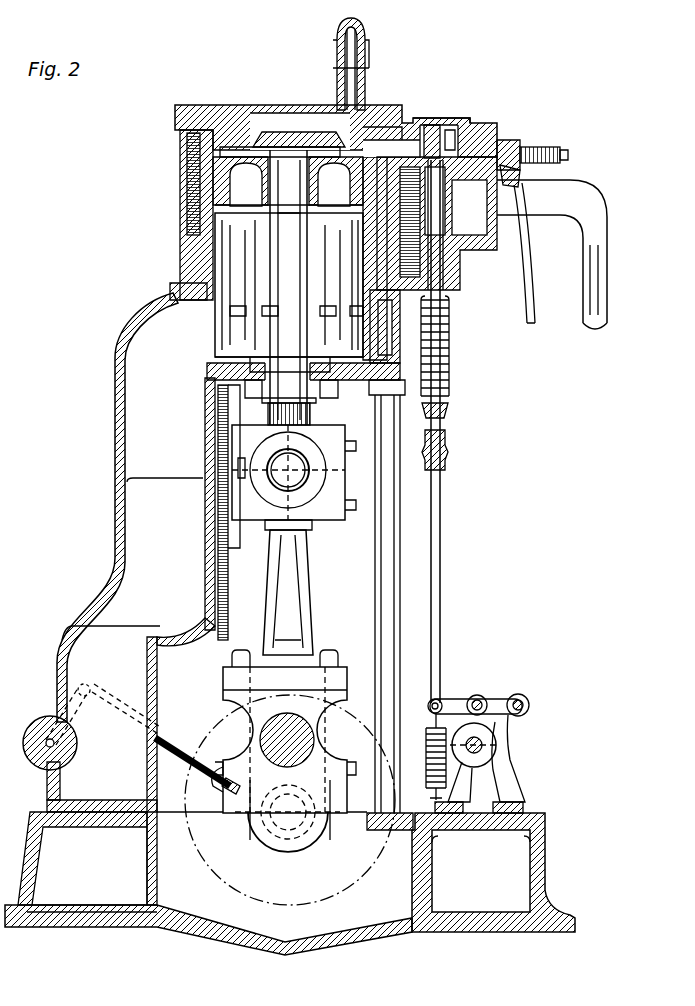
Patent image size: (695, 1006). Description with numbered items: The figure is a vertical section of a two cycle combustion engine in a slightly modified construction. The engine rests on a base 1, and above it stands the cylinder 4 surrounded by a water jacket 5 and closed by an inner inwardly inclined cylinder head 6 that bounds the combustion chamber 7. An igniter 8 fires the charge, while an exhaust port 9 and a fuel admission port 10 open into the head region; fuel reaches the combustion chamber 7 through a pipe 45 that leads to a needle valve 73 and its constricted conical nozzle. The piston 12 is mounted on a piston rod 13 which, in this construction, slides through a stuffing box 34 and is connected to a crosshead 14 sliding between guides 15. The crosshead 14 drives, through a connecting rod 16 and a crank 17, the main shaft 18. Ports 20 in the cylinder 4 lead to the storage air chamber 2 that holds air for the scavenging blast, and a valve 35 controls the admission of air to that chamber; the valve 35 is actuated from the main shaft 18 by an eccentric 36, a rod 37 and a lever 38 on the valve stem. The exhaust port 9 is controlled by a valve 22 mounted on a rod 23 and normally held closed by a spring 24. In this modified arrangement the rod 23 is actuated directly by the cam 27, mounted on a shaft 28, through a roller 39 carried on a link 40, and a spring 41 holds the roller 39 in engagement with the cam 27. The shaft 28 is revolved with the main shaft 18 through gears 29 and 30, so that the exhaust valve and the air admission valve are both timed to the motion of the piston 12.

The base 1 is at (272, 947).
The storage air chamber 2 is at (143, 417).
The cylinder 4 is at (240, 240).
The water jacket 5 is at (190, 212).
The inner inwardly inclined cylinder head 6 is at (267, 137).
The combustion chamber 7 is at (373, 150).
The igniter 8 is at (353, 77).
The exhaust port 9 is at (419, 168).
The fuel admission port 10 is at (428, 160).
The piston 12 is at (217, 177).
The piston rod 13 is at (283, 240).
The crosshead 14 is at (257, 437).
The guides 15 is at (220, 567).
The connecting rod 16 is at (287, 592).
The crank 17 is at (257, 837).
The main shaft 18 is at (290, 827).
The ports 20 is at (263, 316).
The valve 22 is at (503, 147).
The rod 23 is at (440, 283).
The spring 24 is at (450, 363).
The cam 27 is at (482, 748).
The shaft 28 is at (482, 737).
The gear 29 is at (548, 812).
The gear 30 is at (213, 887).
The stuffing box 34 is at (327, 387).
The valve 35 is at (43, 730).
The eccentric 36 is at (270, 842).
The rod 37 is at (167, 750).
The lever 38 is at (72, 712).
The roller 39 is at (478, 700).
The link 40 is at (457, 702).
The spring 41 is at (428, 767).
The pipe 45 is at (527, 308).
The needle valve 73 is at (480, 155).